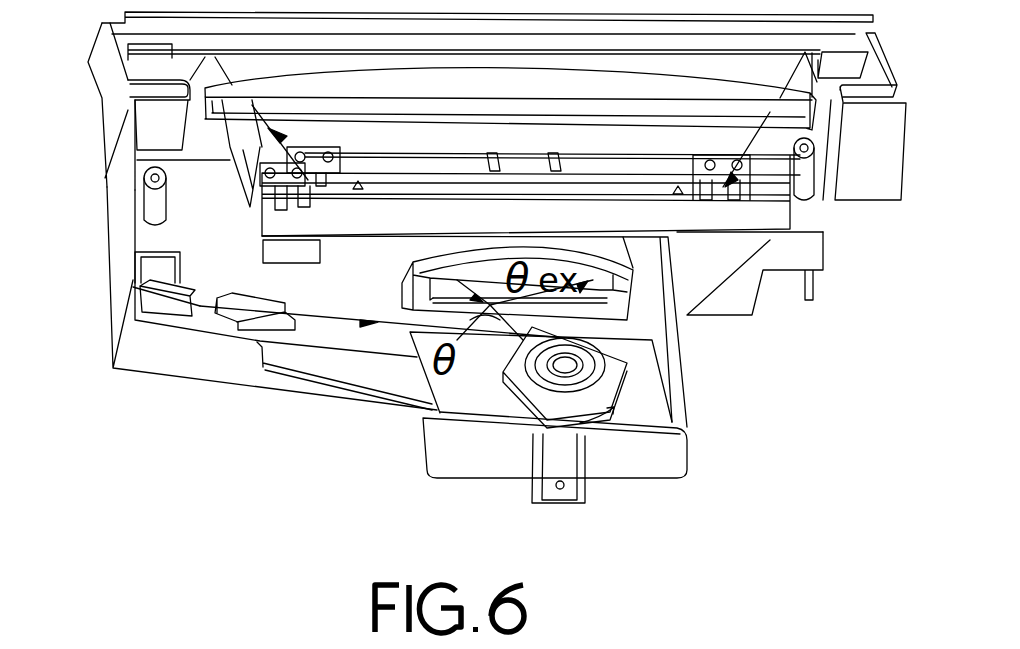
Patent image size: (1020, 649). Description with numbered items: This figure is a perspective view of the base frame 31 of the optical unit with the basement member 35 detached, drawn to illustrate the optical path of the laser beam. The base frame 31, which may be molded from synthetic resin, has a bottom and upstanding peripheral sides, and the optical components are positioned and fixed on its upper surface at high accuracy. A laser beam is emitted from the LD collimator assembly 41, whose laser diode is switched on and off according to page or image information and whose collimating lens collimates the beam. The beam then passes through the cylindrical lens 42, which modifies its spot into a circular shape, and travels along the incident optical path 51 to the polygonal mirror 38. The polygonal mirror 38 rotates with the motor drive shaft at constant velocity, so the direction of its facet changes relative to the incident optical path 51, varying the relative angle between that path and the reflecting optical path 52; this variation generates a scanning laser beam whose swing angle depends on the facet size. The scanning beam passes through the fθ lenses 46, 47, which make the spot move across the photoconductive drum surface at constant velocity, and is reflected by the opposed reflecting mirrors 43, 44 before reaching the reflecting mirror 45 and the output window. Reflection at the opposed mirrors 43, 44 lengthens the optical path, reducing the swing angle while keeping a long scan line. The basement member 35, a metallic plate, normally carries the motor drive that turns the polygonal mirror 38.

The base frame 31 is at (172, 383).
The basement member 35 is at (678, 388).
The polygonal mirror 38 is at (505, 362).
The LD collimator assembly 41 is at (188, 292).
The cylindrical lens 42 is at (236, 332).
The reflecting mirror 43 is at (578, 178).
The reflecting mirror 44 is at (823, 224).
The reflecting mirror 45 is at (177, 37).
The fθ lens 46 is at (413, 262).
The fθ lens 47 is at (243, 130).
The incident optical path 51 is at (340, 317).
The reflecting optical path 52 is at (462, 282).